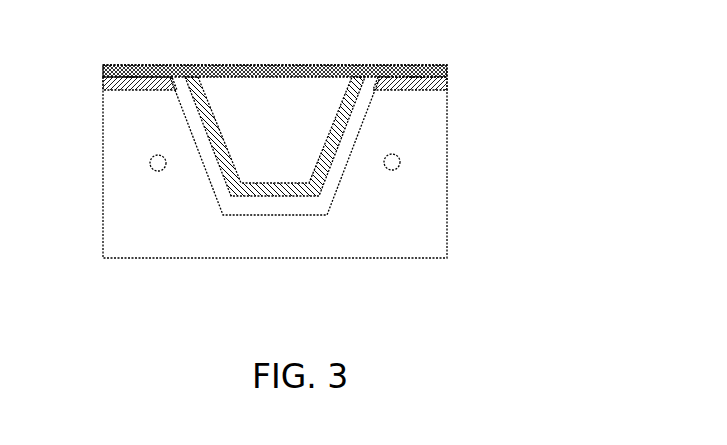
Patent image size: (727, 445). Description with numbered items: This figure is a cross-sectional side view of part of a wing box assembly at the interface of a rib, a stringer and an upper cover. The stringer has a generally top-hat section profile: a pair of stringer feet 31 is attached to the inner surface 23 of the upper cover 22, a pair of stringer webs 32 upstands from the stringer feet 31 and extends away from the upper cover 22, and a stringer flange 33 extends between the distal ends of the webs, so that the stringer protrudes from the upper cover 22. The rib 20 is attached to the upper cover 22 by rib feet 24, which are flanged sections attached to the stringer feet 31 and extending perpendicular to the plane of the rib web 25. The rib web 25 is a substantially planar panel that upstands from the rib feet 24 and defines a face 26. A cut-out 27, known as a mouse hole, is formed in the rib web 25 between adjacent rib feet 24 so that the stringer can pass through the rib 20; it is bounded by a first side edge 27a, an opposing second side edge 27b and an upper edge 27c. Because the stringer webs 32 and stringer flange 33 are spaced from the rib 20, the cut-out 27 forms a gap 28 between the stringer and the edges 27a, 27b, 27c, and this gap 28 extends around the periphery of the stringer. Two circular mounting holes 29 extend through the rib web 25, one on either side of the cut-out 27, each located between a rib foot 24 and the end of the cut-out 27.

The rib 20 is at (415, 250).
The upper cover 22 is at (366, 75).
The inner surface 23 is at (318, 79).
The rib feet 24 is at (103, 90).
The rib web 25 is at (432, 192).
The face 26 is at (153, 250).
The cut-out 27 is at (266, 88).
The first side edge 27a is at (214, 183).
The second side edge 27b is at (247, 217).
The upper edge 27c is at (333, 197).
The gap 28 is at (310, 207).
The mounting holes 29 is at (150, 167).
The stringer feet 31 is at (132, 77).
The stringer webs 32 is at (337, 133).
The stringer flange 33 is at (264, 187).